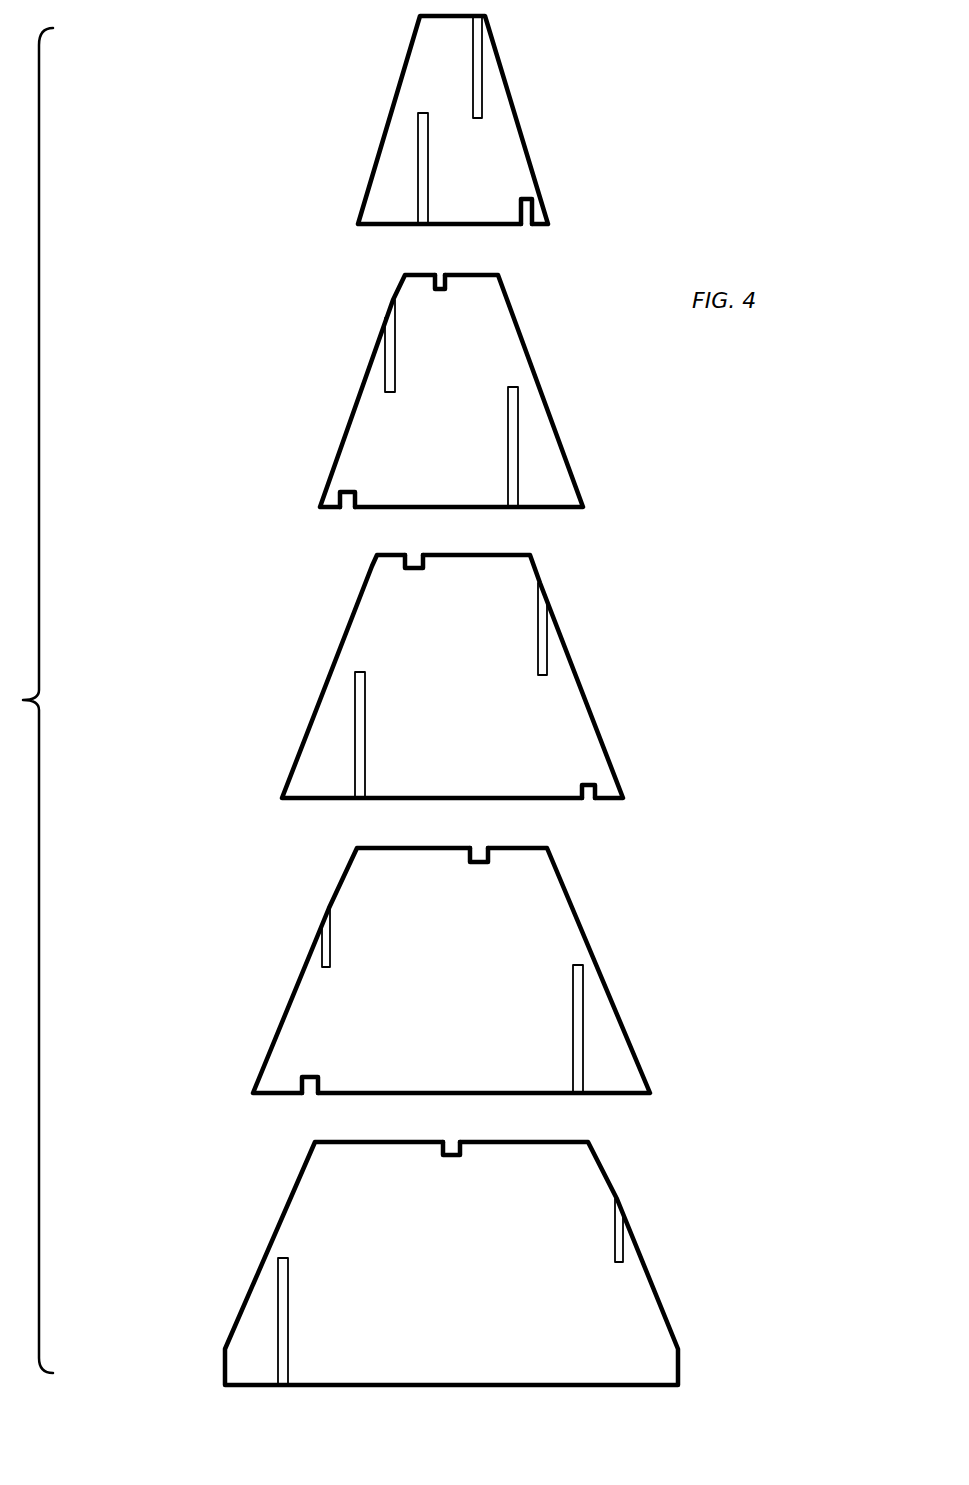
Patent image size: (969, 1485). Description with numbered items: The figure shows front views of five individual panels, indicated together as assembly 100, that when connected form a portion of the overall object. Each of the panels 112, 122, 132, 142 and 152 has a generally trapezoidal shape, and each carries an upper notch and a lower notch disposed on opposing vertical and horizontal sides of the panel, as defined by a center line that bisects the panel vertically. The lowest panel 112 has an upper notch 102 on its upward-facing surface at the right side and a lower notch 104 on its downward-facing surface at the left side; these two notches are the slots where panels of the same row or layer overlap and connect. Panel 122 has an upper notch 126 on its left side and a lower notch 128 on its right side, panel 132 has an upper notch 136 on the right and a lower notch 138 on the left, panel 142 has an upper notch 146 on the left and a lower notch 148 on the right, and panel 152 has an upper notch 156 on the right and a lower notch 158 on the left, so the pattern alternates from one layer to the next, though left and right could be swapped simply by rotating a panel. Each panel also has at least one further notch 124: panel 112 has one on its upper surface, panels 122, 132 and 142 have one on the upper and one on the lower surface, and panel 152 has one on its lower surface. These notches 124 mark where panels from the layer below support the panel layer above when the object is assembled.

The stackable shell assembly 100 is at (226, 437).
The upper notch 102 is at (622, 1245).
The lower notch 104 is at (280, 1318).
The panel 112 is at (645, 1300).
The panel 122 is at (620, 1055).
The notch 124 is at (442, 273).
The upper notch 126 is at (322, 958).
The lower notch 128 is at (580, 1000).
The panel 132 is at (588, 733).
The upper notch 136 is at (546, 638).
The lower notch 138 is at (352, 743).
The panel 142 is at (520, 357).
The upper notch 146 is at (392, 370).
The lower notch 148 is at (517, 462).
The panel 152 is at (512, 142).
The upper notch 156 is at (482, 68).
The lower notch 158 is at (420, 182).